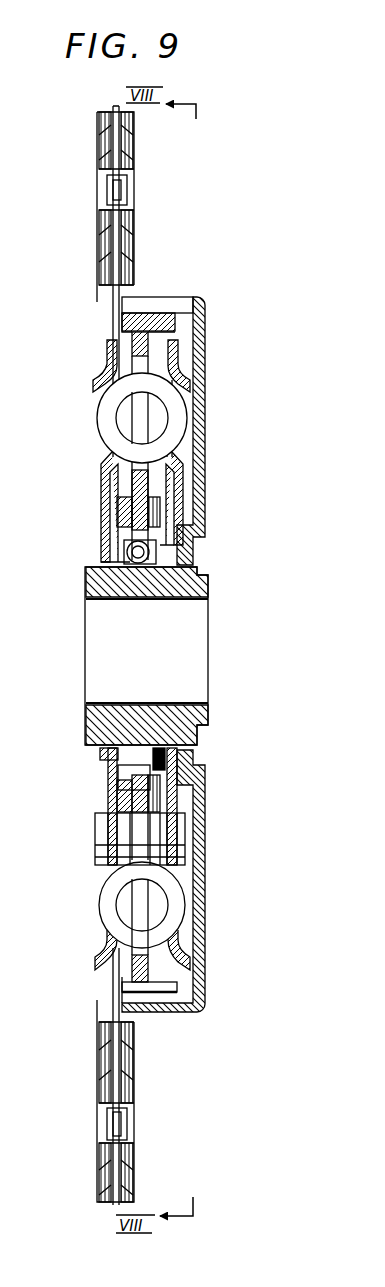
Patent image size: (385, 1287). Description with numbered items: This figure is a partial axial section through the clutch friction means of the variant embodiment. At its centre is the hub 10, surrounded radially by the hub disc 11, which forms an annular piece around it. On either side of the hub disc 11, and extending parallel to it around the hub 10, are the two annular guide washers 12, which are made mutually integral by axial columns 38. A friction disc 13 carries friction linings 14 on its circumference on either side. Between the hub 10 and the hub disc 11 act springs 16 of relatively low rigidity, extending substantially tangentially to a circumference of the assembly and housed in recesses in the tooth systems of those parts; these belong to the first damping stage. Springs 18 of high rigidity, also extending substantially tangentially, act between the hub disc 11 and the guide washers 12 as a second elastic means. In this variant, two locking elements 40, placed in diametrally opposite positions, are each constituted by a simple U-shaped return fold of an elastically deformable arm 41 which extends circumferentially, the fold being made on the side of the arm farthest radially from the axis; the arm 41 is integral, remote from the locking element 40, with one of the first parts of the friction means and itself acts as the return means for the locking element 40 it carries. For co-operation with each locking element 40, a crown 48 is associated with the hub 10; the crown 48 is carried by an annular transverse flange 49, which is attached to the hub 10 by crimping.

The hub 10 is at (79, 603).
The hub disc 11 is at (127, 486).
The annular guide washers 12 is at (100, 338).
The friction disc 13 is at (150, 217).
The friction linings 14 is at (127, 241).
The springs 16 is at (136, 566).
The springs 18 is at (98, 412).
The axial columns 38 is at (100, 831).
The locking elements 40 is at (174, 312).
The elastically deformable arm 41 is at (181, 325).
The crown 48 is at (170, 295).
The annular transverse flange 49 is at (206, 384).